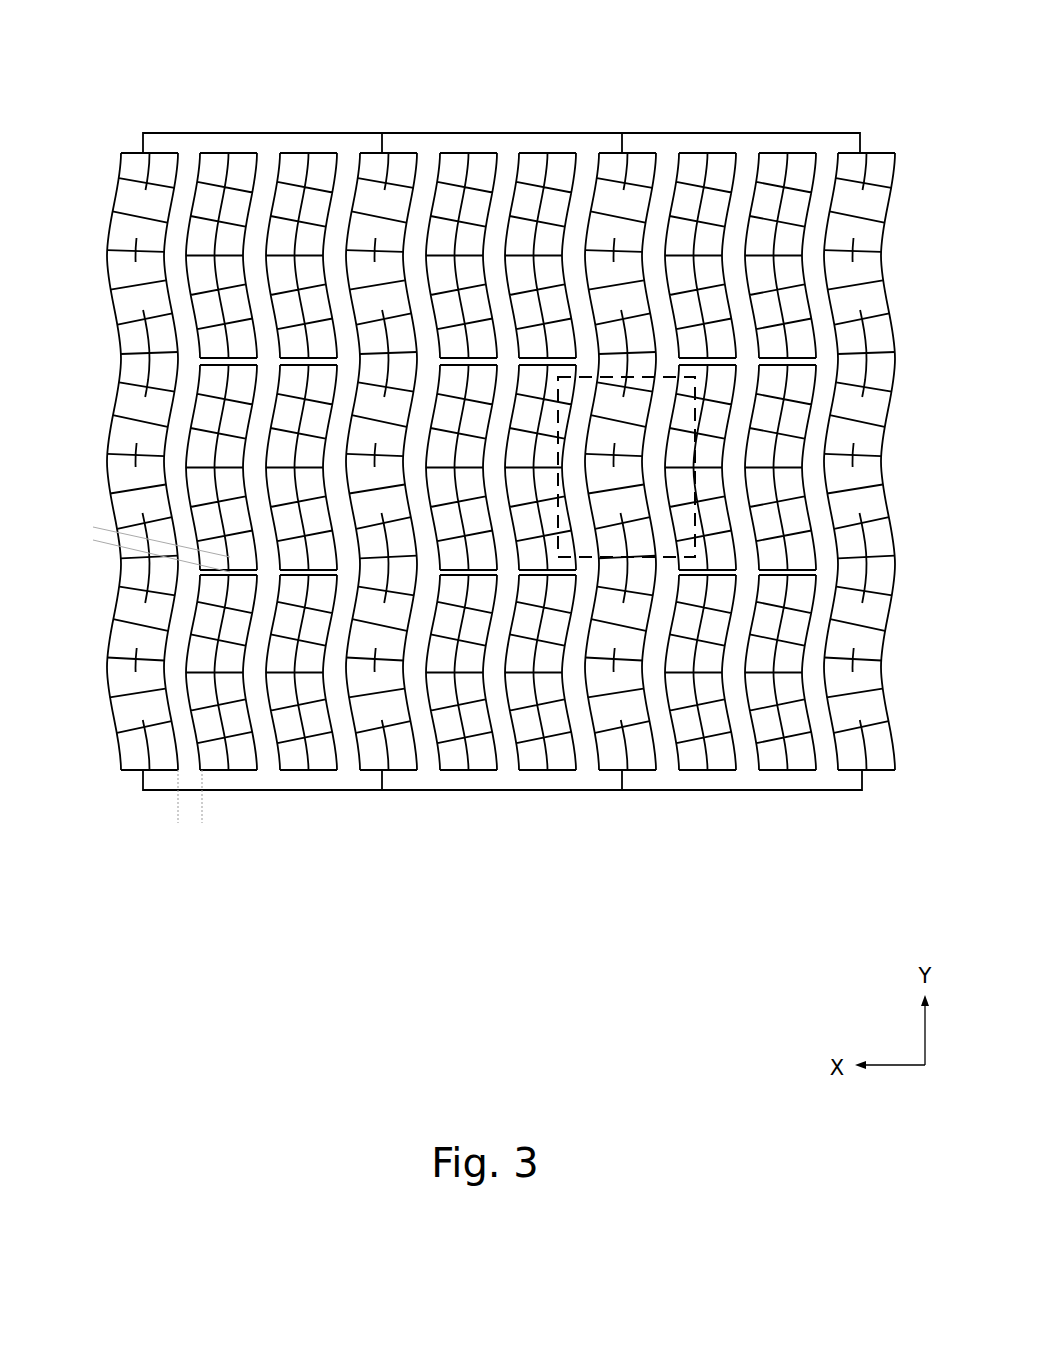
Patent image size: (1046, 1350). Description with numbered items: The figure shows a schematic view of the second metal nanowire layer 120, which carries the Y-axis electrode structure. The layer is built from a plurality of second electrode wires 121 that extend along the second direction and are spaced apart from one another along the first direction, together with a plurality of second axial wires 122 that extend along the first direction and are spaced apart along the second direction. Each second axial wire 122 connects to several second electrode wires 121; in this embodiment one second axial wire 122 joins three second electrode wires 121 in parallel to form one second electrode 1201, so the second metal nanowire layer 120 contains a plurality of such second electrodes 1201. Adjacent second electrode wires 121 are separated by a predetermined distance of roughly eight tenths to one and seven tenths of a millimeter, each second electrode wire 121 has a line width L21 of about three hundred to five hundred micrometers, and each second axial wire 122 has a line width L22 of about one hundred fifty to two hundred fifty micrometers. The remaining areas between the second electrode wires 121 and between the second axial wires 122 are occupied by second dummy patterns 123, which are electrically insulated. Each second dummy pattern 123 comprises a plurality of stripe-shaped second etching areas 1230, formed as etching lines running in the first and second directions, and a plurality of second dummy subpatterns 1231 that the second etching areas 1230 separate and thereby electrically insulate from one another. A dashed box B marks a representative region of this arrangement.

The second metal nanowire layer 120 is at (533, 453).
The second electrode 1201 is at (264, 126).
The second electrode wire 121 is at (825, 163).
The second axial wire 122 is at (810, 355).
The second dummy pattern 123 is at (502, 735).
The second etching area 1230 is at (691, 785).
The second dummy subpattern 1231 is at (778, 710).
The enlarged region B is at (626, 453).
The line width of second electrode wire L21 is at (143, 814).
The line width of second axial wire L22 is at (113, 502).